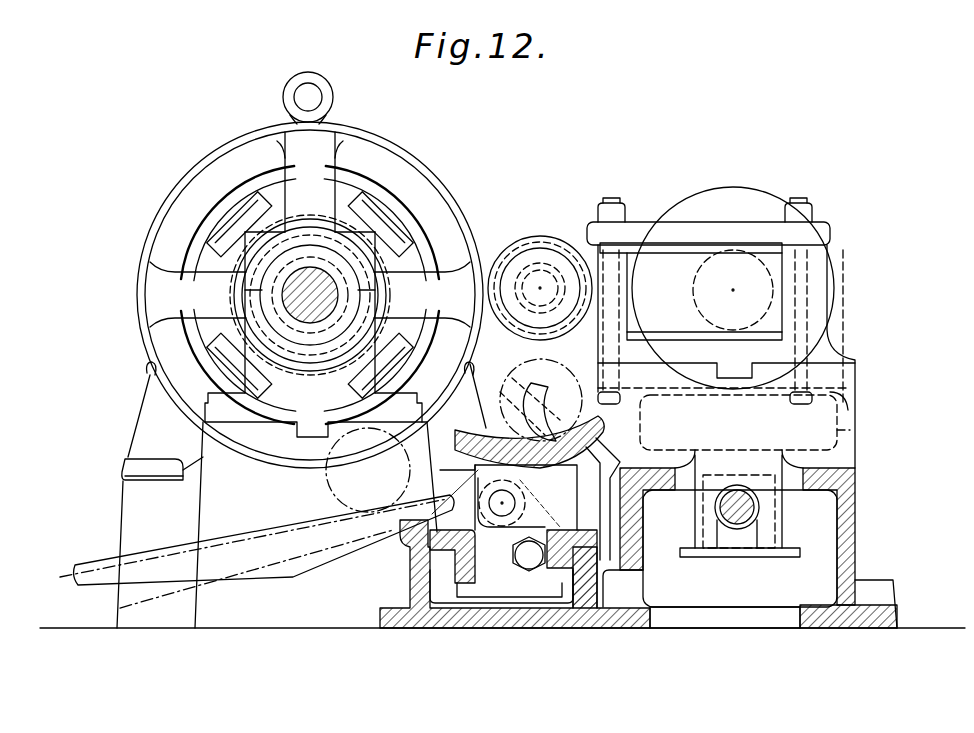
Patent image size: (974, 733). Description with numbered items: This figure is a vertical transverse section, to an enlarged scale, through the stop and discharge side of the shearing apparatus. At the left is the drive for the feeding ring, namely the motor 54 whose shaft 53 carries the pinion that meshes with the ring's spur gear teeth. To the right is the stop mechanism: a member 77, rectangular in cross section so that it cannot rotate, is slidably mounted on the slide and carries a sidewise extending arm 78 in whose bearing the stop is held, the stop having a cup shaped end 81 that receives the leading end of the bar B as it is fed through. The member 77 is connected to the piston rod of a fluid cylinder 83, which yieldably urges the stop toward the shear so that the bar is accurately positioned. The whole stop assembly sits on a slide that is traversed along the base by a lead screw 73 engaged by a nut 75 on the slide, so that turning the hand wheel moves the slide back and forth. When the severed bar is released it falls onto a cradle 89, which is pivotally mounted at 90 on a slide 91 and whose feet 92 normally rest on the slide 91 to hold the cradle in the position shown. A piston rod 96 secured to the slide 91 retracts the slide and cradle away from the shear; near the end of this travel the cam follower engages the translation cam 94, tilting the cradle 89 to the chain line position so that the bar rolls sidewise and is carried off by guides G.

The motor 54 is at (371, 134).
The shaft 53 is at (316, 318).
The cup shaped end 81 is at (526, 265).
The bar B is at (562, 378).
The cradle 89 is at (468, 434).
The translation cam 94 is at (602, 468).
The feet 92 is at (557, 527).
The pivot 90 is at (503, 516).
The slide 91 is at (462, 566).
The piston rod 96 is at (527, 566).
The member 77 is at (672, 232).
The sidewise extending arm 78 is at (691, 291).
The fluid cylinder 83 is at (738, 199).
The lead screw 73 is at (733, 522).
The nut 75 is at (748, 537).
The guides G is at (230, 537).